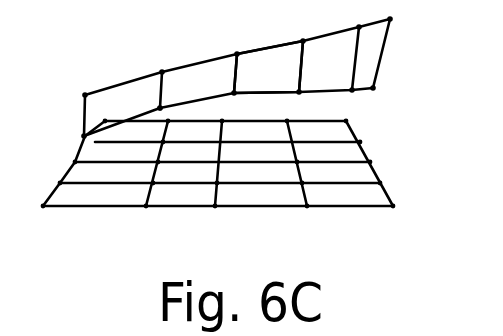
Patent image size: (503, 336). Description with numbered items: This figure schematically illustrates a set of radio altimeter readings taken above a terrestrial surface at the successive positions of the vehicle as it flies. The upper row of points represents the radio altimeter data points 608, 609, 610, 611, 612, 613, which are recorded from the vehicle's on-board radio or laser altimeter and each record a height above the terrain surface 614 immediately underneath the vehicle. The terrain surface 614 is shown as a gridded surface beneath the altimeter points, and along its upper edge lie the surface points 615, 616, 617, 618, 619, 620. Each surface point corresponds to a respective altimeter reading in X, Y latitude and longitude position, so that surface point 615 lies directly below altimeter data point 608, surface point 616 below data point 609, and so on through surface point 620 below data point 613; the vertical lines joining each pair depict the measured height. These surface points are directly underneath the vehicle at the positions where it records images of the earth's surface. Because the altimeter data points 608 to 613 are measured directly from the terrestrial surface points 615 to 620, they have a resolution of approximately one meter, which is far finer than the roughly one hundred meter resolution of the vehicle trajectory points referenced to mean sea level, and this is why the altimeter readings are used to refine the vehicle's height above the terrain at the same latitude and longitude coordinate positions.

The radio altimeter data point 608 is at (81, 82).
The radio altimeter data point 609 is at (157, 60).
The radio altimeter data point 610 is at (234, 42).
The radio altimeter data point 611 is at (297, 30).
The radio altimeter data point 612 is at (342, 15).
The radio altimeter data point 613 is at (391, 11).
The terrain surface 614 is at (272, 90).
The surface point 615 is at (62, 145).
The surface point 616 is at (160, 108).
The surface point 617 is at (234, 105).
The surface point 618 is at (292, 104).
The surface point 619 is at (342, 102).
The surface point 620 is at (386, 101).